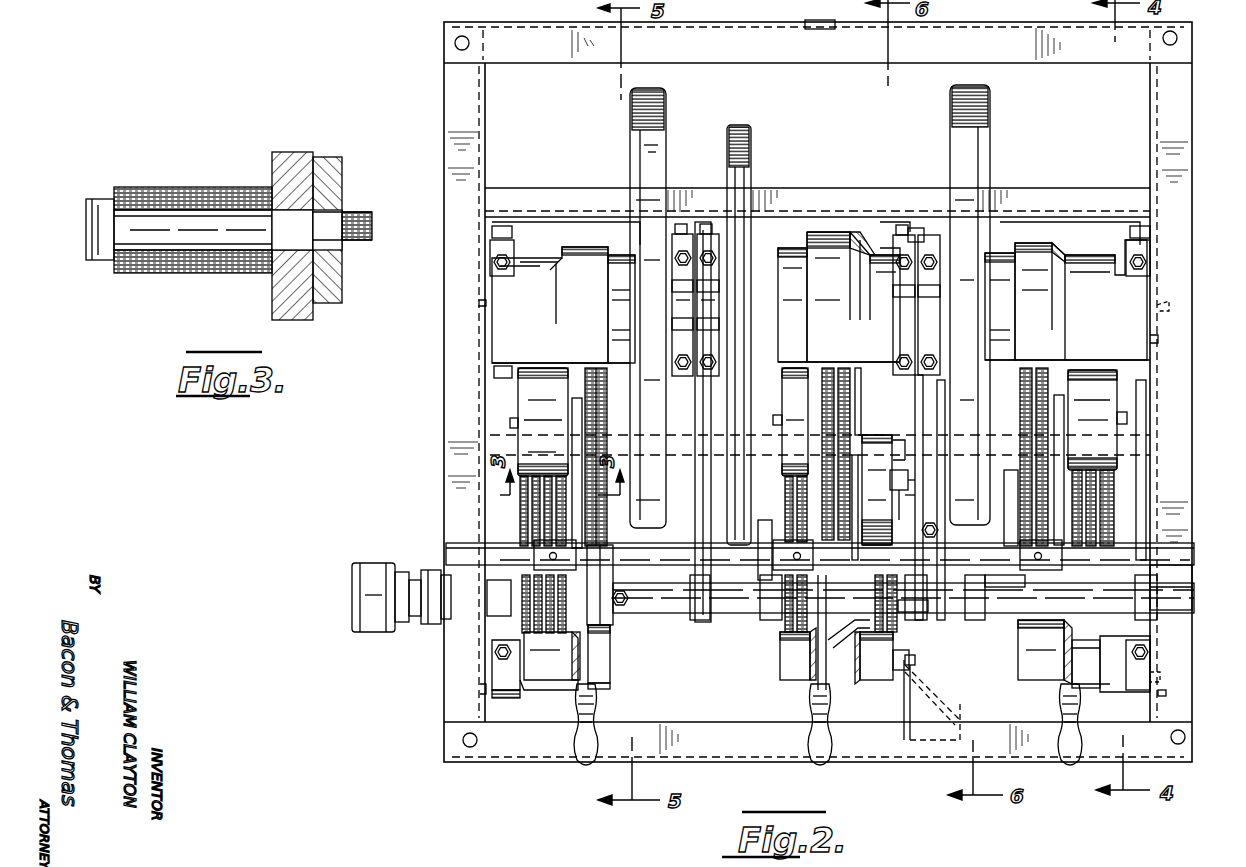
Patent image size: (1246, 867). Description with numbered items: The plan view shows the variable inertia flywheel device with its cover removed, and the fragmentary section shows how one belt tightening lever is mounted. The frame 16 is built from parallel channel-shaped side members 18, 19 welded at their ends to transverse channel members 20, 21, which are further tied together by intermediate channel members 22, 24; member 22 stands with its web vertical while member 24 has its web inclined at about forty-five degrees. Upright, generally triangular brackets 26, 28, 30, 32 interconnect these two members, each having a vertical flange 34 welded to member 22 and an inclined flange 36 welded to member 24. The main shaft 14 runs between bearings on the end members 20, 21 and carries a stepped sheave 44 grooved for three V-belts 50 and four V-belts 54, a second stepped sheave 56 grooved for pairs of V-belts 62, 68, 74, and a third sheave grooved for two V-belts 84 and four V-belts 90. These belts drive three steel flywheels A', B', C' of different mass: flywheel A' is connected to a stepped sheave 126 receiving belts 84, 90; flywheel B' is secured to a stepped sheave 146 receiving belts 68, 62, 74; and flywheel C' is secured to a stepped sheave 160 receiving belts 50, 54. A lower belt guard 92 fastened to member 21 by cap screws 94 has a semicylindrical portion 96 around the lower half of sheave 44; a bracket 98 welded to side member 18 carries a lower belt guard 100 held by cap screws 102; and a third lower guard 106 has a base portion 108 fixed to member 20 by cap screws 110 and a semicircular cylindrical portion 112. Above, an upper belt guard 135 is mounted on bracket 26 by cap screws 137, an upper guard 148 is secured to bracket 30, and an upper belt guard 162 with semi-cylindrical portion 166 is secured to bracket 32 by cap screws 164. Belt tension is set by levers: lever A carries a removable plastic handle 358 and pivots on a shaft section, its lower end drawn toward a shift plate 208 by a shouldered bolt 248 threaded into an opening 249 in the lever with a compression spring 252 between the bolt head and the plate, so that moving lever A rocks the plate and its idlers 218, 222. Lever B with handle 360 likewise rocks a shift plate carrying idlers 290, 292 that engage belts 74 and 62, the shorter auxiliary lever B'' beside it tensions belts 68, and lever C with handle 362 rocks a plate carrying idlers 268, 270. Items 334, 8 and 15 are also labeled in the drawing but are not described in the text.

In FIG. 3, the shouldered bolt 248 is at (99, 196).
In FIG. 3, the compression spring 252 is at (201, 188).
In FIG. 3, the shift plate 208 is at (294, 152).
In FIG. 3, the lever A is at (345, 226).
In FIG. 2, the lever A is at (549, 676).
In FIG. 3, the opening 249 is at (344, 242).
In FIG. 2, the frame 16 is at (443, 379).
In FIG. 2, the side member 19 is at (540, 38).
In FIG. 2, the side member 18 is at (502, 762).
In FIG. 2, the transverse channel member 20 is at (448, 96).
In FIG. 2, the transverse channel member 21 is at (1185, 92).
In FIG. 2, the intermediate channel member 22 is at (821, 186).
In FIG. 2, the clip 334 is at (814, 20).
In FIG. 2, the flywheel A' is at (666, 301).
In FIG. 2, the flywheel B' is at (751, 318).
In FIG. 2, the flywheel C' is at (986, 305).
In FIG. 2, the vertical flange 34 is at (504, 224).
In FIG. 2, the upper belt guard 135 is at (549, 270).
In FIG. 2, the stepped sheave 126 is at (622, 246).
In FIG. 2, the cap screws 137 is at (476, 301).
In FIG. 2, the bracket 26 is at (486, 342).
In FIG. 2, the stepped sheave 146 is at (766, 272).
In FIG. 2, the upper guard 148 is at (854, 297).
In FIG. 2, the bracket 30 is at (906, 482).
In FIG. 2, the stop 8 is at (896, 468).
In FIG. 2, the stepped sheave 160 is at (998, 270).
In FIG. 2, the semi-cylindrical portion 166 is at (1044, 244).
In FIG. 2, the upper belt guard 162 is at (1106, 300).
In FIG. 2, the bracket 32 is at (1156, 336).
In FIG. 2, the cap screws 164 is at (1170, 313).
In FIG. 2, the idler 218 is at (540, 380).
In FIG. 2, the V-belts 84 is at (592, 370).
In FIG. 2, the idler 290 is at (796, 378).
In FIG. 2, the V-belts 62 is at (827, 370).
In FIG. 2, the V-belts 68 is at (866, 366).
In FIG. 2, the idler 268 is at (1084, 380).
In FIG. 2, the V-belts 50 is at (1036, 410).
In FIG. 2, the V-belts 54 is at (1102, 498).
In FIG. 2, the stepped sheave 44 is at (1014, 516).
In FIG. 2, the intermediate channel member 24 is at (682, 452).
In FIG. 2, the V-belts 74 is at (790, 502).
In FIG. 2, the bracket 28 is at (813, 508).
In FIG. 2, the main shaft 14 is at (700, 624).
In FIG. 2, the inclined flange 36 is at (730, 604).
In FIG. 2, the idler 222 is at (594, 631).
In FIG. 2, the idler 270 is at (1026, 584).
In FIG. 2, the shaft coupling 15 is at (395, 563).
In FIG. 2, the V-belts 90 is at (552, 656).
In FIG. 2, the base portion 108 is at (514, 696).
In FIG. 2, the cap screws 110 is at (476, 690).
In FIG. 2, the lower guard 106 is at (610, 654).
In FIG. 2, the semicircular cylindrical portion 112 is at (602, 684).
In FIG. 2, the plastic handle 358 is at (580, 762).
In FIG. 2, the lower belt guard 100 is at (780, 658).
In FIG. 2, the second stepped sheave 56 is at (774, 622).
In FIG. 2, the lever B is at (824, 670).
In FIG. 2, the idler 292 is at (877, 629).
In FIG. 2, the auxiliary lever B'' is at (880, 680).
In FIG. 2, the cap screws 102 is at (910, 670).
In FIG. 2, the bracket 98 is at (910, 762).
In FIG. 2, the plastic handle 360 is at (818, 758).
In FIG. 2, the lower belt guard 92 is at (1014, 668).
In FIG. 2, the semicylindrical portion 96 is at (1047, 681).
In FIG. 2, the lever C is at (1091, 666).
In FIG. 2, the plastic handle 362 is at (1072, 761).
In FIG. 2, the cap screws 94 is at (1160, 678).